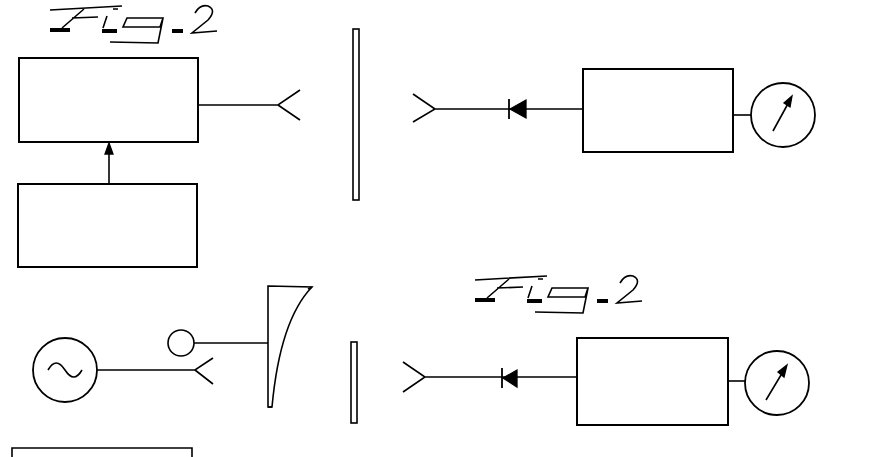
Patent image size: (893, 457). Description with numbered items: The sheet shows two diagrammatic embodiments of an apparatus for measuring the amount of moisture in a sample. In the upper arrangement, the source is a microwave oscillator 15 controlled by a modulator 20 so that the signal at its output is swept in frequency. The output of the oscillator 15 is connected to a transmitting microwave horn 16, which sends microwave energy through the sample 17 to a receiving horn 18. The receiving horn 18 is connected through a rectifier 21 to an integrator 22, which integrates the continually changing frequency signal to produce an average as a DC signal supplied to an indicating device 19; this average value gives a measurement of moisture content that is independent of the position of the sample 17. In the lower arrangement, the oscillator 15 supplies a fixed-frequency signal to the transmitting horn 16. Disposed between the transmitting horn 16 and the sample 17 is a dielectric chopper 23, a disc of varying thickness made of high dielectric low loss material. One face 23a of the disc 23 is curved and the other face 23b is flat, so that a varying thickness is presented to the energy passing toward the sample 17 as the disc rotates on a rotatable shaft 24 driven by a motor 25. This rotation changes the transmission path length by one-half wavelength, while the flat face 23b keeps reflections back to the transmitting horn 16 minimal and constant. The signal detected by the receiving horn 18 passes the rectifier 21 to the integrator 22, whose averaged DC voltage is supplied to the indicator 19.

In FIG. 2, the oscillator 15 is at (200, 73).
In FIG. 3, the oscillator 15 is at (70, 338).
In FIG. 2, the transmitting microwave horn 16 is at (287, 105).
In FIG. 3, the transmitting microwave horn 16 is at (200, 386).
In FIG. 2, the sample 17 is at (360, 57).
In FIG. 3, the sample 17 is at (358, 341).
In FIG. 2, the receiving horn 18 is at (418, 95).
In FIG. 3, the receiving horn 18 is at (412, 367).
In FIG. 2, the indicating device 19 is at (776, 82).
In FIG. 3, the indicating device 19 is at (757, 354).
In FIG. 2, the modulator 20 is at (197, 223).
In FIG. 2, the rectifier 21 is at (511, 121).
In FIG. 3, the rectifier 21 is at (505, 390).
In FIG. 2, the integrator 22 is at (648, 153).
In FIG. 3, the integrator 22 is at (620, 338).
In FIG. 3, the dielectric chopper 23 is at (290, 286).
In FIG. 3, the curved face 23a is at (308, 295).
In FIG. 3, the flat face 23b is at (262, 397).
In FIG. 3, the shaft 24 is at (223, 330).
In FIG. 3, the motor 25 is at (183, 330).